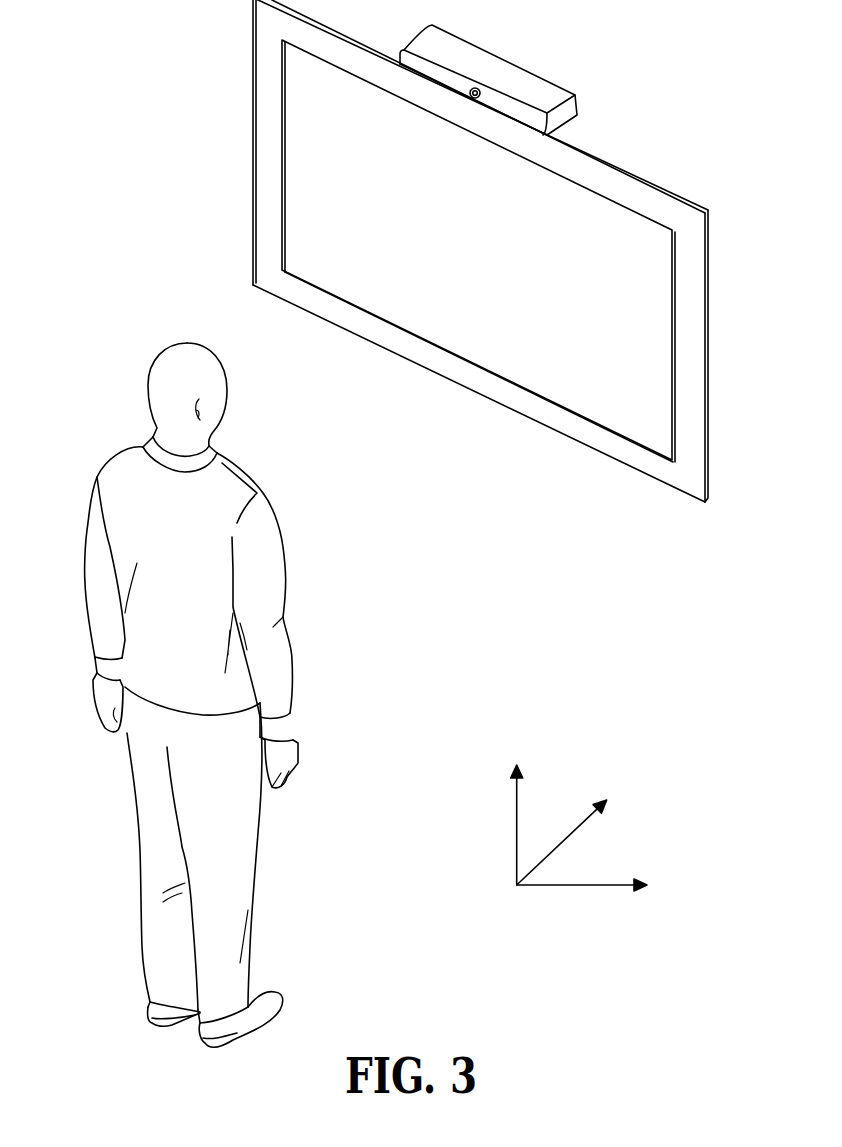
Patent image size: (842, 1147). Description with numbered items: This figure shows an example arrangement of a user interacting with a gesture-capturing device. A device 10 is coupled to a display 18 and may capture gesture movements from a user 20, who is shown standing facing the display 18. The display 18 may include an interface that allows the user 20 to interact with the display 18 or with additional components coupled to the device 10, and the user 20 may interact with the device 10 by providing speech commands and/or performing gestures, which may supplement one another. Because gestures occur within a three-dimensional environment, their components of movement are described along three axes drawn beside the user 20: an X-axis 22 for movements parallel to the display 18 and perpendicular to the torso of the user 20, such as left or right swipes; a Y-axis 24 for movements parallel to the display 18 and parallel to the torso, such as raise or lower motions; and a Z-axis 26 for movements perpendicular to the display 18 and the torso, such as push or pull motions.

The device 10 is at (589, 96).
The display 18 is at (669, 175).
The user 20 is at (104, 422).
The X-axis 22 is at (698, 896).
The Y-axis 24 is at (538, 748).
The Z-axis 26 is at (672, 781).